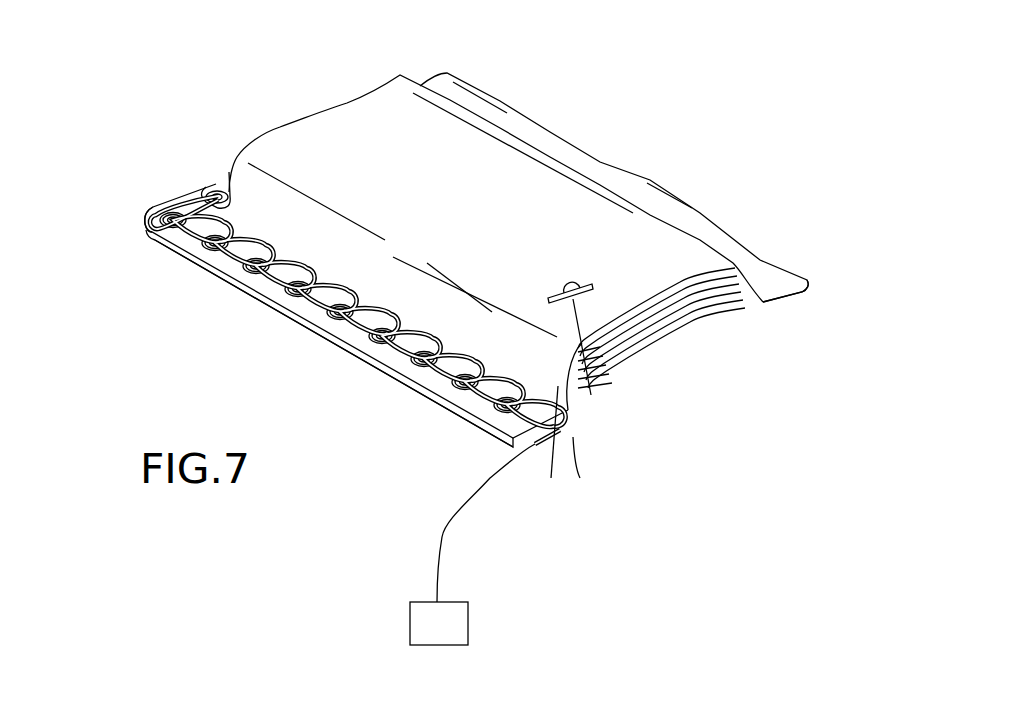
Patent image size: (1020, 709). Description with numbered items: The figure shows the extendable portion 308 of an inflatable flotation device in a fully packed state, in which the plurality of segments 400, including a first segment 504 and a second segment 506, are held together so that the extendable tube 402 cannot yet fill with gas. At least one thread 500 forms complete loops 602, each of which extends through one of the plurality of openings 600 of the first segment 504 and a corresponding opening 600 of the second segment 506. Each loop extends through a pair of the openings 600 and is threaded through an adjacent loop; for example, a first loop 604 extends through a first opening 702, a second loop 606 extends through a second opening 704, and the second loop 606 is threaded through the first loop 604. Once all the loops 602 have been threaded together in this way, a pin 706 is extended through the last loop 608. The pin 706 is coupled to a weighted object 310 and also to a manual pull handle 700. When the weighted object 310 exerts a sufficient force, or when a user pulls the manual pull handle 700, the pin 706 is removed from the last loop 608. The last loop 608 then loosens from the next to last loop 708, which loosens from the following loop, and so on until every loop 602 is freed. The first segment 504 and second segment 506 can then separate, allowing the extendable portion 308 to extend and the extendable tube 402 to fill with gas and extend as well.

The extendable portion 308 is at (159, 80).
The plurality of segments 400 is at (137, 213).
The at least one thread 500 is at (195, 194).
The first segment 504 is at (292, 132).
The second segment 506 is at (770, 312).
The extendable tube 402 is at (745, 312).
The plurality of openings 600 is at (148, 232).
The loops 602 is at (192, 240).
The first loop 604 is at (265, 294).
The second loop 606 is at (326, 315).
The first opening 702 is at (238, 279).
The second opening 704 is at (292, 318).
The pin 706 is at (557, 389).
The next to last loop 708 is at (477, 398).
The last loop 608 is at (545, 440).
The manual pull handle 700 is at (598, 292).
The weighted object 310 is at (468, 619).